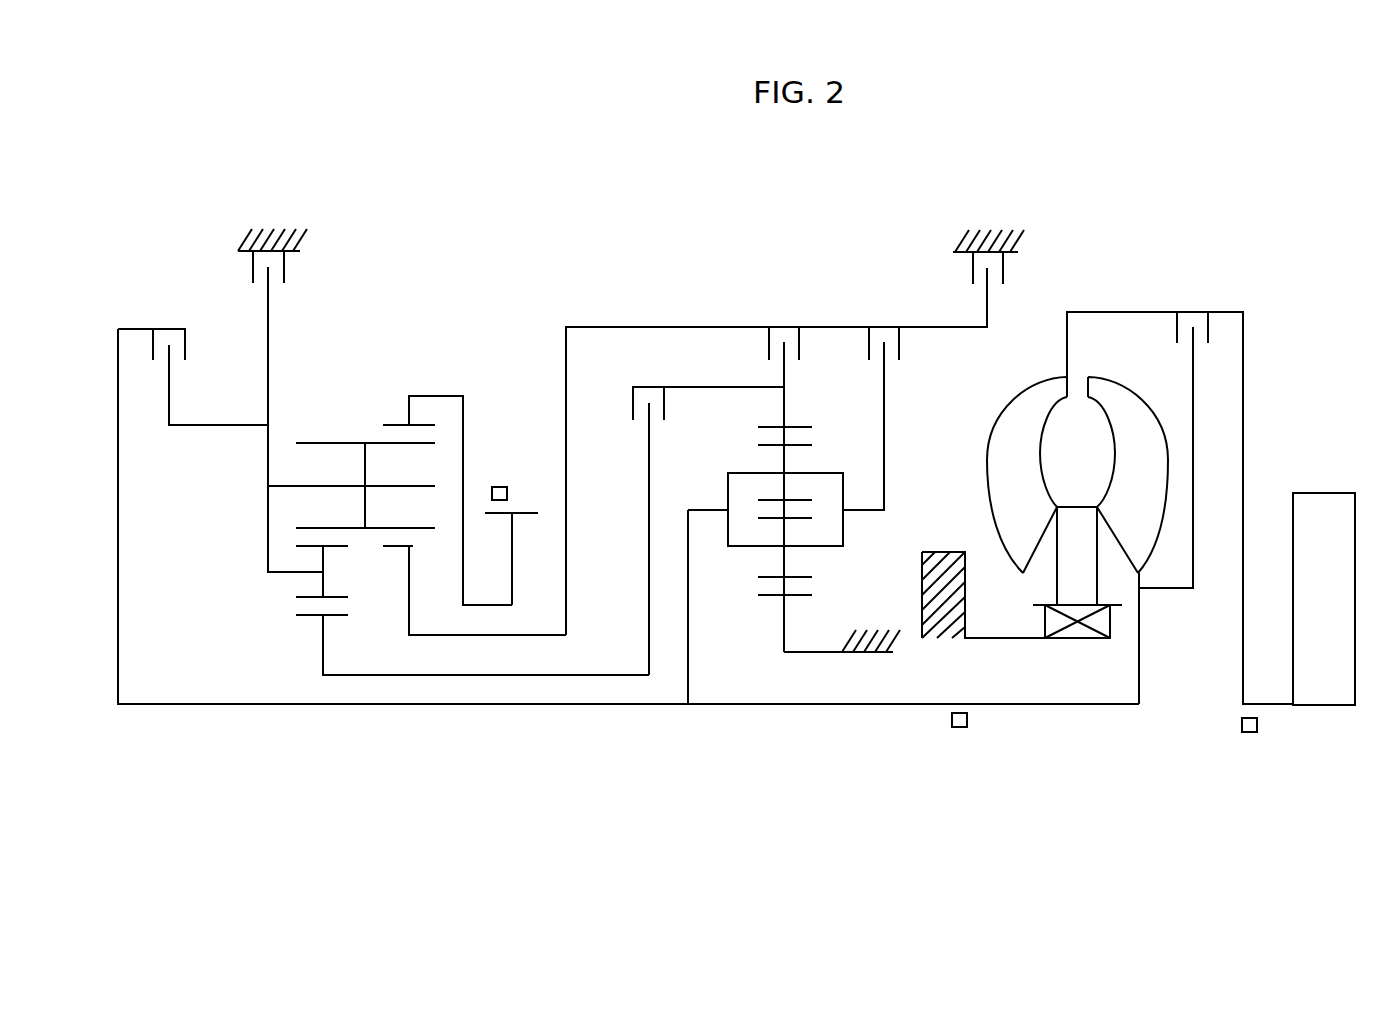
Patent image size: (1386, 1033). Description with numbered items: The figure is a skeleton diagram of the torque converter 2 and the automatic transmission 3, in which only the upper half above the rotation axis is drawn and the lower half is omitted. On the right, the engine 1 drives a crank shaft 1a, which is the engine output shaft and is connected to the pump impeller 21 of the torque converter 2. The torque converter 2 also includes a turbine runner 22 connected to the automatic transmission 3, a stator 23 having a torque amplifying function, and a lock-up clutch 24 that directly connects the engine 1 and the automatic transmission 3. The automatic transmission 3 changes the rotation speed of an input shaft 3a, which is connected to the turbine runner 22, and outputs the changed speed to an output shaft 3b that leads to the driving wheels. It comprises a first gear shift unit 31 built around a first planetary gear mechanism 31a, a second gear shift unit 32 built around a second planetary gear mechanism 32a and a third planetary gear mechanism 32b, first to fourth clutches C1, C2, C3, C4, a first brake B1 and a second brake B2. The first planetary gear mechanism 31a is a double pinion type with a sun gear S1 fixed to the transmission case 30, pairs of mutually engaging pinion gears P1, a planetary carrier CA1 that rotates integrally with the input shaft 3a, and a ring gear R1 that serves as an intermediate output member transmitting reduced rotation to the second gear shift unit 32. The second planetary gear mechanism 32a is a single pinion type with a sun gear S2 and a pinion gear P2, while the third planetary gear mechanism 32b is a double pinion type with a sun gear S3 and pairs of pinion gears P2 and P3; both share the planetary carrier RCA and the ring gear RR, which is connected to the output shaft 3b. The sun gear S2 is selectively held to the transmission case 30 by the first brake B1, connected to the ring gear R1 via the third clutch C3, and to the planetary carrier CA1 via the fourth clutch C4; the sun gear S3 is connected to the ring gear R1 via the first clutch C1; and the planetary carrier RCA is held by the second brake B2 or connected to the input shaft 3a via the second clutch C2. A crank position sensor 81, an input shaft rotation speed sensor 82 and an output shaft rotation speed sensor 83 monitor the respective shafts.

The engine 1 is at (1323, 492).
The crank shaft 1a is at (1280, 706).
The torque converter 2 is at (1137, 298).
The pump impeller 21 is at (1021, 393).
The turbine runner 22 is at (1135, 393).
The stator 23 is at (1077, 506).
The lock-up clutch 24 is at (1209, 295).
The automatic transmission 3 is at (764, 236).
The input shaft 3a is at (823, 706).
The output shaft 3b is at (528, 513).
The transmission case 30 is at (301, 253).
The first gear shift unit 31 is at (836, 305).
The first planetary gear mechanism 31a is at (732, 644).
The second gear shift unit 32 is at (505, 293).
The second planetary gear mechanism 32a is at (413, 661).
The third planetary gear mechanism 32b is at (303, 661).
The crank position sensor 81 is at (1249, 735).
The input shaft rotation speed sensor 82 is at (960, 730).
The output shaft rotation speed sensor 83 is at (502, 483).
The first brake B1 is at (973, 268).
The second brake B2 is at (253, 268).
The first clutch C1 is at (633, 405).
The second clutch C2 is at (153, 342).
The third clutch C3 is at (769, 345).
The fourth clutch C4 is at (900, 342).
The ring gear R1 is at (758, 429).
The pinion gears P1 is at (800, 441).
The planetary carrier CA1 is at (843, 525).
The sun gear S1 is at (772, 596).
The ring gear RR is at (383, 425).
The planetary carrier RCA is at (268, 510).
The pinion gear P2 is at (372, 529).
The pinion gear P3 is at (296, 546).
The sun gear S2 is at (420, 547).
The sun gear S3 is at (296, 615).